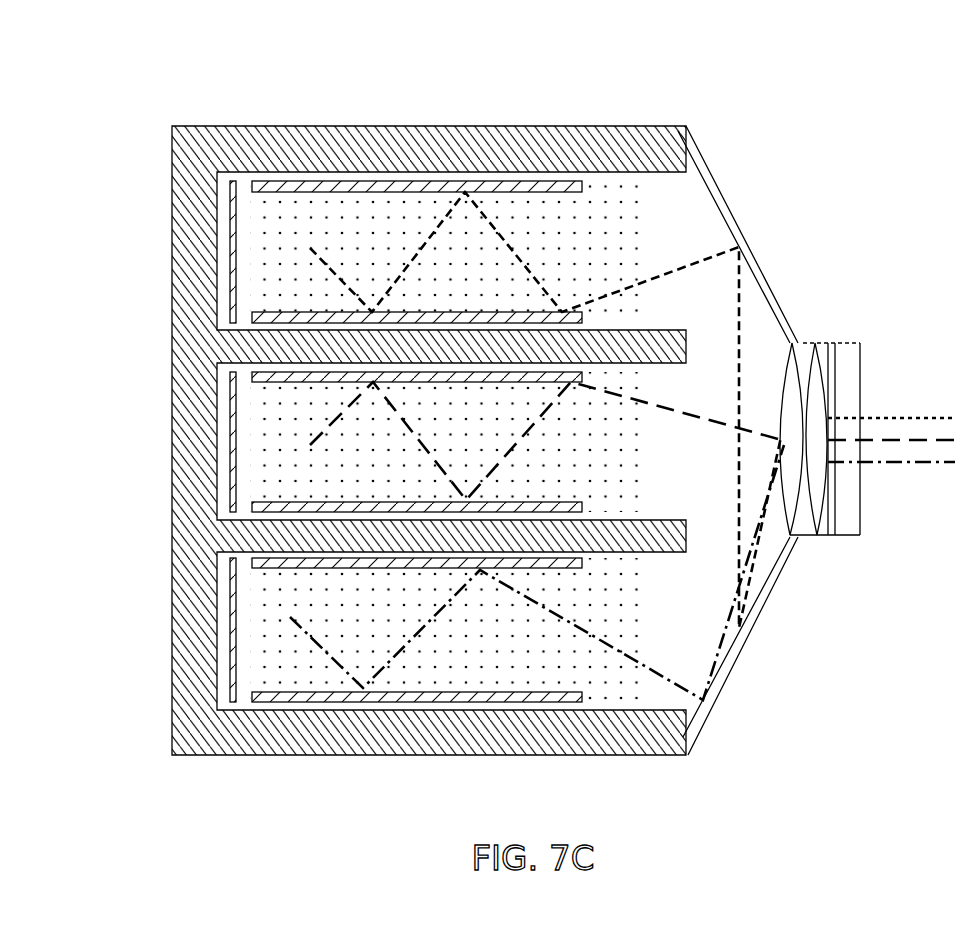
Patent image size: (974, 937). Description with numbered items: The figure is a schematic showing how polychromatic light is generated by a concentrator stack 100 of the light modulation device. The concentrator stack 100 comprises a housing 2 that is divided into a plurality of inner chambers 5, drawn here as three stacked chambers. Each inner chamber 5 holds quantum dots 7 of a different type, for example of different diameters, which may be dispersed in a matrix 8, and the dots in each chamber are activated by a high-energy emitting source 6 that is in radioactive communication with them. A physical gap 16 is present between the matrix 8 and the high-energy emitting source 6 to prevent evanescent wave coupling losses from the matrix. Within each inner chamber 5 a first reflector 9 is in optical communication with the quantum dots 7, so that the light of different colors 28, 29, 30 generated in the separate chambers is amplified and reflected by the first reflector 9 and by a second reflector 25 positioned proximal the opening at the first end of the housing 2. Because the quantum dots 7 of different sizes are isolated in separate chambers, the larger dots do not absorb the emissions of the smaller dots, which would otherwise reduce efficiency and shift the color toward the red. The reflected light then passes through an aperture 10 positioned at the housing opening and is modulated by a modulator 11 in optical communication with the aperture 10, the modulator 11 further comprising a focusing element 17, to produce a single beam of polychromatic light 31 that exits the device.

The concentrator stack 100 is at (338, 80).
The housing 2 is at (193, 757).
The inner chambers 5 is at (463, 487).
The high-energy emitting source 6 is at (232, 640).
The quantum dots 7 is at (260, 597).
The matrix 8 is at (633, 672).
The first reflector 9 is at (421, 702).
The aperture 10 is at (796, 345).
The modulator 11 is at (825, 450).
The physical gap 16 is at (237, 183).
The focusing element 17 is at (826, 360).
The second reflector 25 is at (733, 666).
The light of a first color 28 is at (438, 626).
The light of a second color 29 is at (518, 446).
The light of a third color 30 is at (424, 251).
The beam of polychromatic light 31 is at (897, 463).